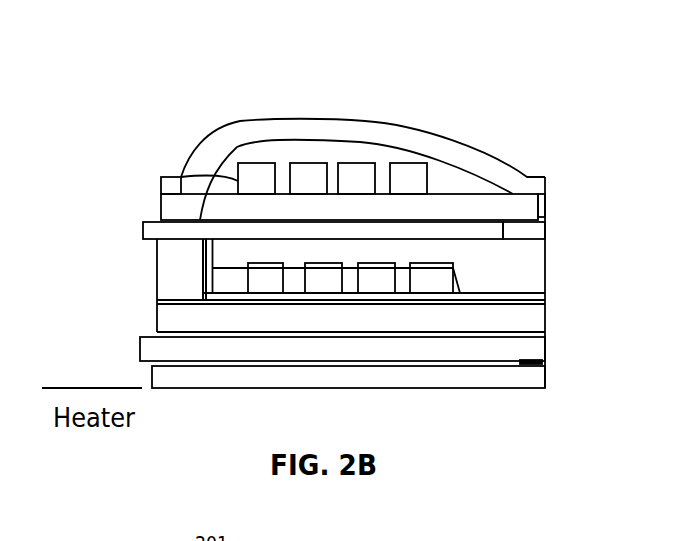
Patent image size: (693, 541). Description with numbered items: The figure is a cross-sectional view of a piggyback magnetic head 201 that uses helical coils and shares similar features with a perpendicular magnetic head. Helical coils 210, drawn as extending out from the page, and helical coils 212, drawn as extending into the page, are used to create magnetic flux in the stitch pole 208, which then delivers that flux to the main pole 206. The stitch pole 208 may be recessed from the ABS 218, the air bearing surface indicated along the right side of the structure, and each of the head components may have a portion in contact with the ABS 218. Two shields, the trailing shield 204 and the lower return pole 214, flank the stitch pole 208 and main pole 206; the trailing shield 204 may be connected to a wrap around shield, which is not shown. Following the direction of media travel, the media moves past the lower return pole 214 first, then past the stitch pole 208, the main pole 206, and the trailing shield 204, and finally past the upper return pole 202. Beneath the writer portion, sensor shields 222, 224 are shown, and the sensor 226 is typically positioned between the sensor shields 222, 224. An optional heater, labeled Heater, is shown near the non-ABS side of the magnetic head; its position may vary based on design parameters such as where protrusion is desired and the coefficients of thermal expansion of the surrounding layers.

The piggyback magnetic head 201 is at (230, 101).
The upper return pole 202 is at (483, 150).
The trailing shield 204 is at (547, 207).
The main pole 206 is at (547, 226).
The stitch pole 208 is at (503, 240).
The helical coils 210 is at (183, 176).
The helical coils 212 is at (248, 263).
The lower return pole 214 is at (388, 328).
The ABS 218 is at (547, 307).
The sensor shield 222 is at (140, 340).
The sensor shield 224 is at (152, 376).
The sensor 226 is at (541, 361).